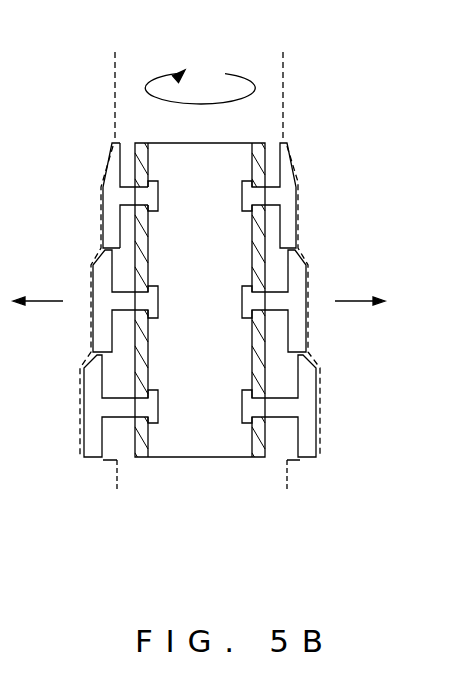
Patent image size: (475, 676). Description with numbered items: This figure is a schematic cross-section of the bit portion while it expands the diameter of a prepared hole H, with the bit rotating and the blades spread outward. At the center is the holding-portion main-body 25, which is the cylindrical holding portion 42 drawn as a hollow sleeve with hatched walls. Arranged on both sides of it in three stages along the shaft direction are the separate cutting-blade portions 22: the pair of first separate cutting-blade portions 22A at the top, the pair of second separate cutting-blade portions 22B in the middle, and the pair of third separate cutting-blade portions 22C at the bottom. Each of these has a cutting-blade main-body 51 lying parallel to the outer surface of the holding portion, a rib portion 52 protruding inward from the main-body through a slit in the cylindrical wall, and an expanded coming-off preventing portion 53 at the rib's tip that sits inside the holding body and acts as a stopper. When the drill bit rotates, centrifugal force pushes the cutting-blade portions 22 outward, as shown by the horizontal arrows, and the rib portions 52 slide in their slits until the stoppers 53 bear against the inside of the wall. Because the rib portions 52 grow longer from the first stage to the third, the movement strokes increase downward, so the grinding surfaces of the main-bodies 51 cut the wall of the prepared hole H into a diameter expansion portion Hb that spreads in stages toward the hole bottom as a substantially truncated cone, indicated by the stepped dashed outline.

The separate cutting-blade portions 22 is at (251, 291).
The first separate cutting-blade portions 22A is at (250, 186).
The second separate cutting-blade portions 22B is at (336, 254).
The third separate cutting-blade portions 22C is at (336, 364).
The holding-portion main-body 25 is at (256, 452).
The cylindrical holding portion 42 is at (211, 345).
The cutting-blade main-bodies 51 is at (112, 192).
The rib portions 52 is at (127, 197).
The coming-off preventing portions 53 is at (158, 200).
The prepared hole H is at (115, 93).
The diameter expansion portion Hb is at (93, 459).